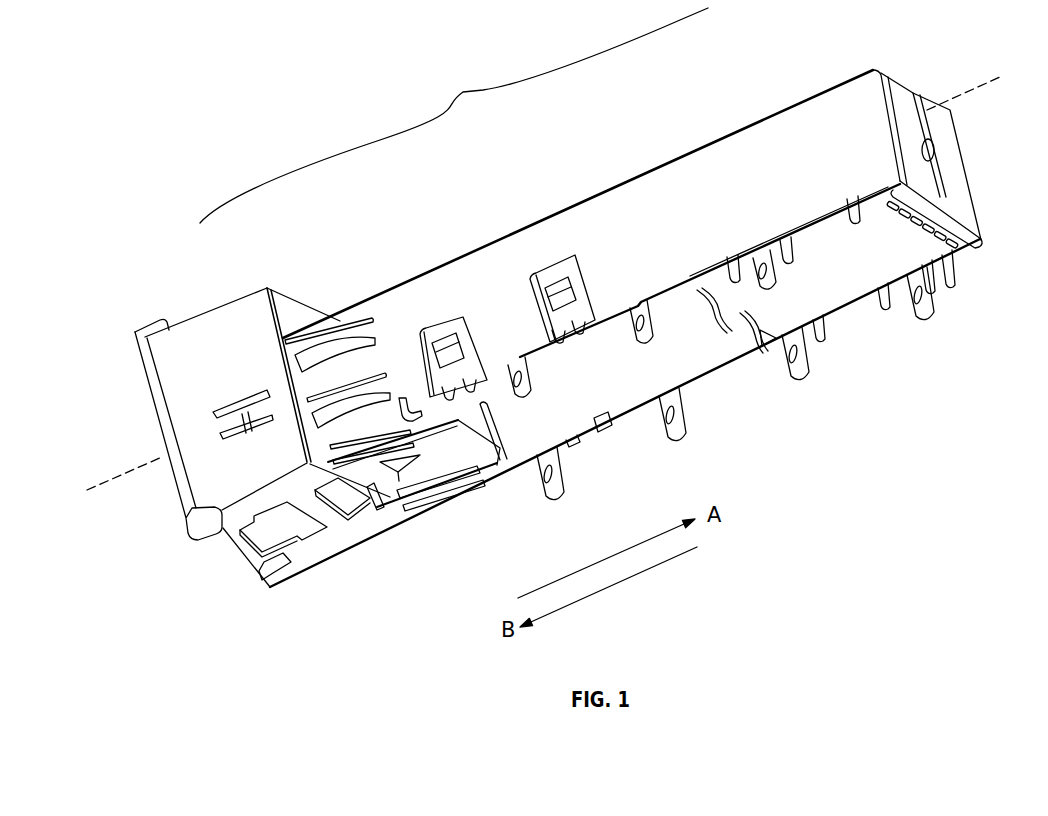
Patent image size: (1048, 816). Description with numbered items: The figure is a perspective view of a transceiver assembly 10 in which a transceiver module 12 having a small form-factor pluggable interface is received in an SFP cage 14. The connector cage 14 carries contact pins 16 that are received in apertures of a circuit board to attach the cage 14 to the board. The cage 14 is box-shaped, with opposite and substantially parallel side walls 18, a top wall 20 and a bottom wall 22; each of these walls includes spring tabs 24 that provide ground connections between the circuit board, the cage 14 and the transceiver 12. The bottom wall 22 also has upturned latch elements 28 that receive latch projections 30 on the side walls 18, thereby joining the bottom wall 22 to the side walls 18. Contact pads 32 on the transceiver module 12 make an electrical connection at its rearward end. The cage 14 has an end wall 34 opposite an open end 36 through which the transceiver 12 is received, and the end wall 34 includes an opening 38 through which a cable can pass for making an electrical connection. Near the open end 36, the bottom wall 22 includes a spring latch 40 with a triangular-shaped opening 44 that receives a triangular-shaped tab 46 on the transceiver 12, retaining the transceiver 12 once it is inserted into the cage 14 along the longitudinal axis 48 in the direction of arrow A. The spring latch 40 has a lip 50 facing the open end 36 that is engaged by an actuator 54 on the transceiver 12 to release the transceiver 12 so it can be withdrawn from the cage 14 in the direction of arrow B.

The assembly 10 is at (454, 115).
The transceiver module 12 is at (262, 280).
The SFP cage 14 is at (758, 108).
The contact pins 16 is at (920, 324).
The side walls 18 is at (788, 192).
The top wall 20 is at (532, 223).
The bottom wall 22 is at (688, 348).
The spring tabs 24 is at (347, 338).
The latch elements 28 is at (589, 300).
The latch projections 30 is at (567, 288).
The contact pads 32 is at (951, 255).
The end wall 34 is at (903, 90).
The open end 36 is at (279, 361).
The opening 38 is at (935, 152).
The spring latch 40 is at (441, 484).
The triangular-shaped opening 44 is at (424, 499).
The triangular-shaped tab 46 is at (375, 503).
The longitudinal axis 48 is at (137, 466).
The lip 50 is at (367, 507).
The actuator 54 is at (347, 502).